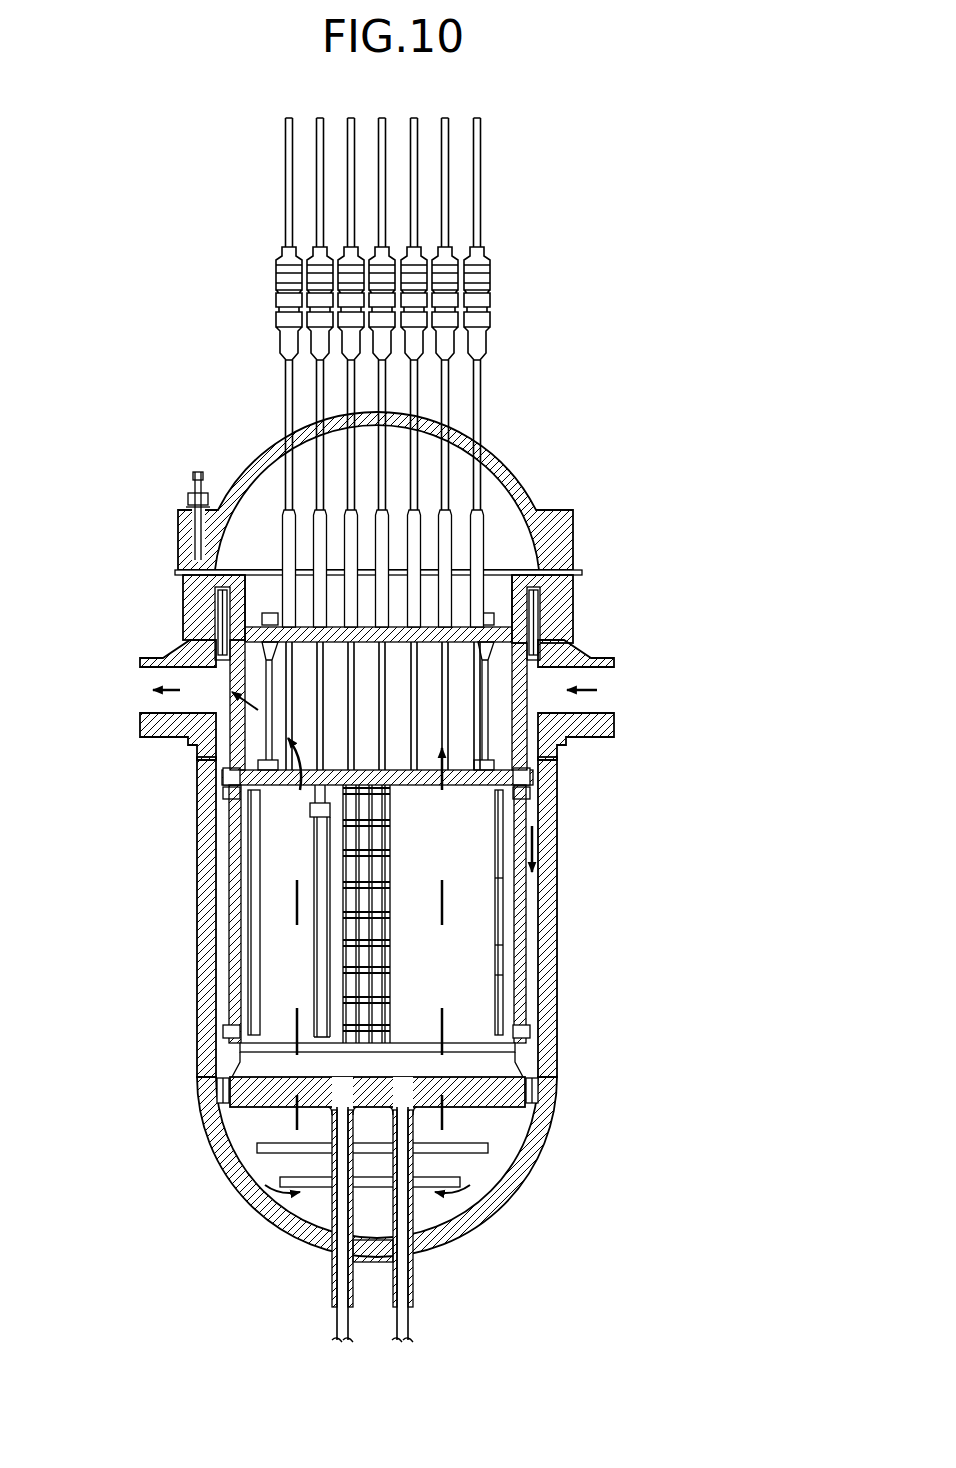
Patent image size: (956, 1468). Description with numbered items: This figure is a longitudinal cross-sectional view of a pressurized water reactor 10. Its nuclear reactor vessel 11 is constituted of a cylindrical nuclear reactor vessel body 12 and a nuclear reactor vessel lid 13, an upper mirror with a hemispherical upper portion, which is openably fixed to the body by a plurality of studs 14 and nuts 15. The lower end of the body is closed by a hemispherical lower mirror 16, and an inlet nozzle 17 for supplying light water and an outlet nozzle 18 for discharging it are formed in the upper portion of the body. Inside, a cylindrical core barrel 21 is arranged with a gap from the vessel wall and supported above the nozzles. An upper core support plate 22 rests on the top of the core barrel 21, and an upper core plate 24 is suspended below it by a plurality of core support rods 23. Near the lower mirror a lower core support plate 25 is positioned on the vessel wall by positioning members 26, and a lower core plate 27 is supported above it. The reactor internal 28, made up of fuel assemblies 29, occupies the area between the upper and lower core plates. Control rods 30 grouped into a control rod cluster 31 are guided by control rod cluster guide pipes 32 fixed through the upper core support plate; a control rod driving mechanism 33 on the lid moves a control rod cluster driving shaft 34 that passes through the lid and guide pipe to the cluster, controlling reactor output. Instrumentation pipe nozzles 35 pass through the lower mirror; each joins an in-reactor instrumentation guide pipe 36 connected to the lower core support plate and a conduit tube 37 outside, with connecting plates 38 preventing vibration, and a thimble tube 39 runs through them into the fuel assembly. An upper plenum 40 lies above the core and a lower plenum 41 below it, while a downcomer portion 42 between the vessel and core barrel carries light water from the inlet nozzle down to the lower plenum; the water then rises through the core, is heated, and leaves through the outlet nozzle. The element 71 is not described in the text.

The pressurized water reactor 10 is at (150, 245).
The nuclear reactor vessel 11 is at (580, 598).
The nuclear reactor vessel body 12 is at (557, 853).
The nuclear reactor vessel lid 13 is at (463, 620).
The stud 14 is at (180, 533).
The nut 15 is at (195, 490).
The lower mirror 16 is at (443, 1212).
The inlet nozzle 17 is at (585, 698).
The outlet nozzle 18 is at (140, 703).
The core barrel 21 is at (516, 916).
The upper core support plate 22 is at (487, 638).
The core support rod 23 is at (490, 668).
The upper core plate 24 is at (525, 768).
The lower core support plate 25 is at (242, 1103).
The positioning member 26 is at (222, 1090).
The lower core plate 27 is at (285, 1050).
The reactor internal 28 is at (508, 968).
The fuel assembly 29 is at (392, 835).
The control rod 30 is at (300, 832).
The control rod cluster 31 is at (305, 802).
The control rod cluster guide pipe 32 is at (318, 553).
The control rod driving mechanism 33 is at (502, 236).
The control rod cluster driving shaft 34 is at (320, 378).
The instrumentation pipe nozzle 35 is at (333, 1282).
The in-reactor instrumentation guide pipe 36 is at (413, 1170).
The conduit tube 37 is at (337, 1308).
The connecting plate 38 is at (482, 1148).
The thimble tube 39 is at (340, 1338).
The upper plenum 40 is at (258, 710).
The lower plenum 41 is at (448, 1252).
The downcomer portion 42 is at (534, 1018).
The hold-down rod 71 is at (225, 631).